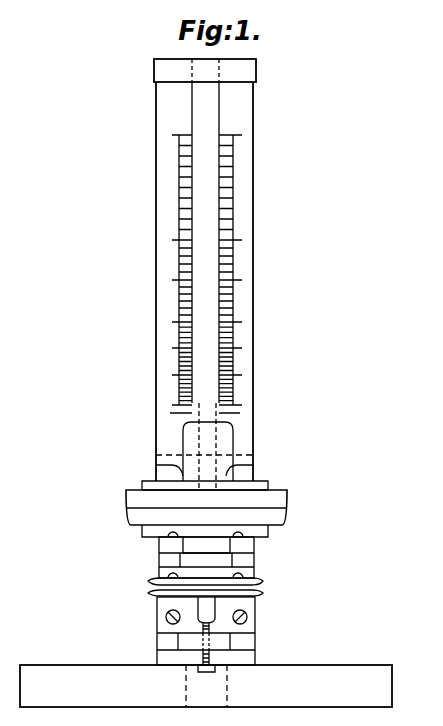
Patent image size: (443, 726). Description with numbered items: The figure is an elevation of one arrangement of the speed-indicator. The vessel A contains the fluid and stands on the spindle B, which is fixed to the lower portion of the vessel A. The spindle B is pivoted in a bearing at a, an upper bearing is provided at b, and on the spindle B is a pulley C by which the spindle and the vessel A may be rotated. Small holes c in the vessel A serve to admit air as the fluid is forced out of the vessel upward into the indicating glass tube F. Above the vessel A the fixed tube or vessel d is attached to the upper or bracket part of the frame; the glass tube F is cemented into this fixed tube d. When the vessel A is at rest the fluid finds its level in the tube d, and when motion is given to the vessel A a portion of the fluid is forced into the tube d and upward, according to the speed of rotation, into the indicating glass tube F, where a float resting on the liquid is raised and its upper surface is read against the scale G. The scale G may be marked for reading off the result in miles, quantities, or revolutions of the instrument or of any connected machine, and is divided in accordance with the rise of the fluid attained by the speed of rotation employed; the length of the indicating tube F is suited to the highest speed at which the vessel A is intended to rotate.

The vessel A is at (206, 509).
The spindle B is at (206, 631).
The pulley C is at (202, 274).
The indicating glass tube F is at (207, 372).
The scale G is at (205, 270).
The bearing a is at (204, 652).
The upper bearing b is at (206, 557).
The small holes c is at (205, 587).
The fixed tube or vessel d is at (210, 414).